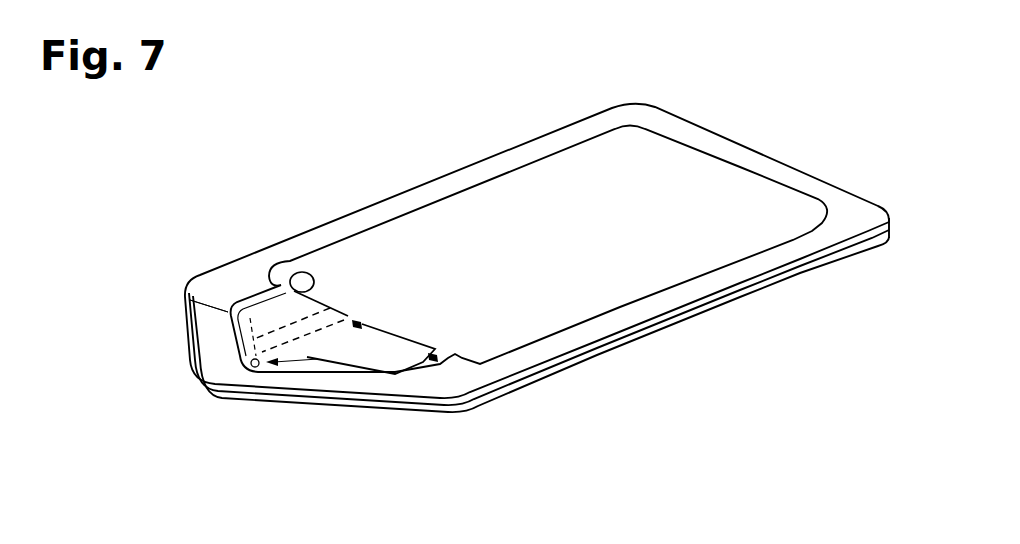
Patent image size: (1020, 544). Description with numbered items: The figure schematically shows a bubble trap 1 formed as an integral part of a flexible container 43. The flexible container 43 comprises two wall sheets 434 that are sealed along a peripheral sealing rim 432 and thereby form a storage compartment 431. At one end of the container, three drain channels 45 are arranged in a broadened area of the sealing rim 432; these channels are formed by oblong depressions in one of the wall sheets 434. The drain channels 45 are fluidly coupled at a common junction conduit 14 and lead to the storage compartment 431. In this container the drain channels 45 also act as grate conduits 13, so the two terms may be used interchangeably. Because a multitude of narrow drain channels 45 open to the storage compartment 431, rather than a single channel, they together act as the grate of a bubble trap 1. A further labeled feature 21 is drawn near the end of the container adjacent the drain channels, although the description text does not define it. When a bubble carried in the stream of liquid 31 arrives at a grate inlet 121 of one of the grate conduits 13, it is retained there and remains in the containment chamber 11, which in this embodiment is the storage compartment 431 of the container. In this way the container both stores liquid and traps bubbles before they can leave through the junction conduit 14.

The bubble trap 1 is at (348, 298).
The containment chamber 11 is at (593, 292).
The grate conduits 13 is at (190, 300).
The junction conduit 14 is at (238, 355).
The positioning knob 21 is at (290, 270).
The stream of liquid 31 is at (447, 353).
The flexible container 43 is at (710, 197).
The drain channels 45 is at (190, 300).
The grate inlets 121 is at (356, 324).
The storage compartment 431 is at (593, 292).
The peripheral sealing rim 432 is at (437, 188).
The wall sheets 434 is at (577, 227).